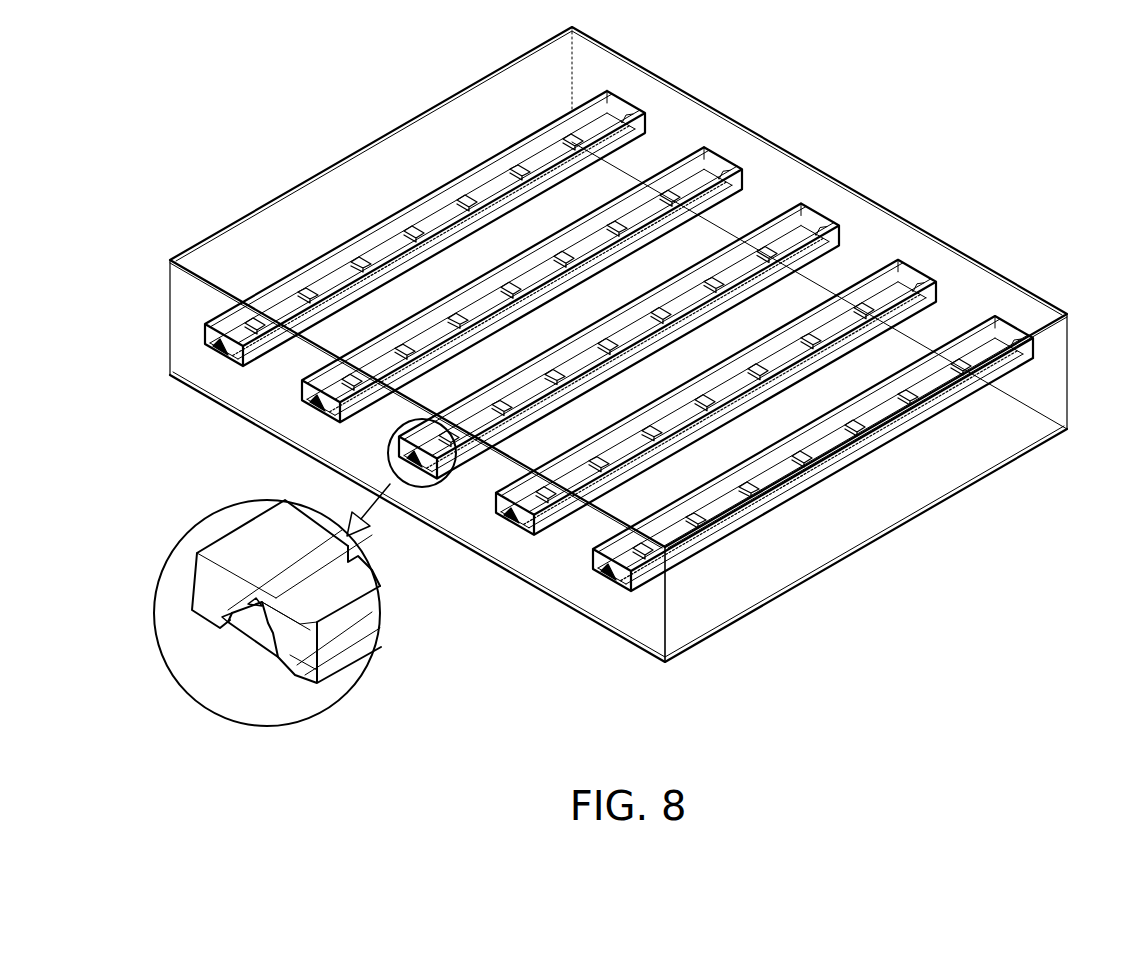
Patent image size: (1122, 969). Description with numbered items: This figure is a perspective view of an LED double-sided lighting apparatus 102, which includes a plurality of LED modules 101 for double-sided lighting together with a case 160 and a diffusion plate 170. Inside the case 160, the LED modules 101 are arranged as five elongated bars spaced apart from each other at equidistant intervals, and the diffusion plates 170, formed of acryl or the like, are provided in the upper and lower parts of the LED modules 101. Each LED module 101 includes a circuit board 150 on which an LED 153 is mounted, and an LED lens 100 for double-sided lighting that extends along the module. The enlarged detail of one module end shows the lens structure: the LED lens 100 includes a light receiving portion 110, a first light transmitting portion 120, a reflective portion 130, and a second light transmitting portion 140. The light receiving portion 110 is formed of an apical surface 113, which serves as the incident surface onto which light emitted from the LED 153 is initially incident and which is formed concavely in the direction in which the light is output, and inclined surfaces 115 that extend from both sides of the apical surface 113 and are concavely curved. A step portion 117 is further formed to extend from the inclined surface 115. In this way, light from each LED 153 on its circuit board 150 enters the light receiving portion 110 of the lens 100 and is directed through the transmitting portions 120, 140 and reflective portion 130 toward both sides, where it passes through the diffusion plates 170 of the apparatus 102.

The LED lens for double-sided lighting 100 is at (619, 316).
The LED module 101 is at (622, 98).
The LED double-sided lighting apparatus 102 is at (880, 127).
The light receiving portion 110 is at (243, 602).
The apical surface 113 is at (252, 598).
The inclined surfaces 115 is at (257, 600).
The step portion 117 is at (229, 622).
The first light transmitting portion 120 is at (240, 537).
The reflective portion 130 is at (343, 652).
The second light transmitting portion 140 is at (303, 682).
The circuit board 150 is at (612, 572).
The LED 153 is at (642, 538).
The case 160 is at (360, 155).
The diffusion plate 170 is at (713, 108).